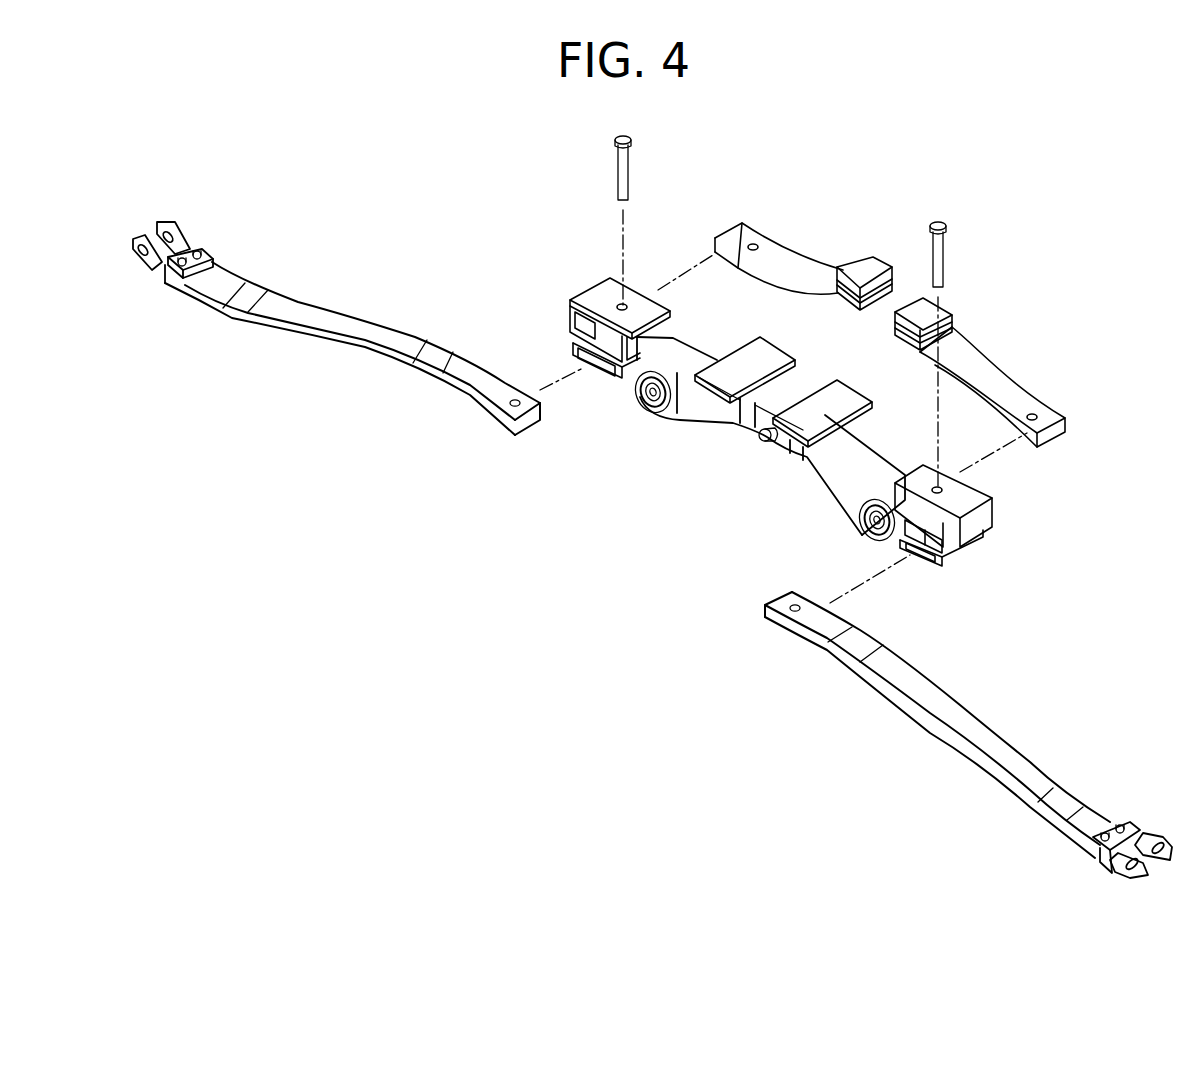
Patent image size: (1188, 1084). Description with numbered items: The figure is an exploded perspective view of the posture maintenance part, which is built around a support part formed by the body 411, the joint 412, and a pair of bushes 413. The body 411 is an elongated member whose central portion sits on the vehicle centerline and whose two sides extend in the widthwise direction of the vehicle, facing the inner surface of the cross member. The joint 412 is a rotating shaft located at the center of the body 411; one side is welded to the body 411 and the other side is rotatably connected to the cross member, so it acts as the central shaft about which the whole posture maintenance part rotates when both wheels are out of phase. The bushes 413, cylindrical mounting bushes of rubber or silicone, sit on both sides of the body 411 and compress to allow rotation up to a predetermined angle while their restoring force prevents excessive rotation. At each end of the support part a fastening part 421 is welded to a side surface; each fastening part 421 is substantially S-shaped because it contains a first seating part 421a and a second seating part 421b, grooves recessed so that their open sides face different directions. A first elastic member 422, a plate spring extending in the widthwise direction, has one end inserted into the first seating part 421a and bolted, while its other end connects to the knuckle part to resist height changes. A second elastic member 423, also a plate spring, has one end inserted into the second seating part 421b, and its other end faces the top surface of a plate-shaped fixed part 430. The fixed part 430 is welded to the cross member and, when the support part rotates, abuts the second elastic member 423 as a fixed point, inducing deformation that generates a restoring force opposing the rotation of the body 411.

The body 411 is at (830, 472).
The joint 412 is at (760, 437).
The bush 413 is at (640, 397).
The fastening part 421 is at (781, 351).
The first seating part 421a is at (580, 340).
The second seating part 421b is at (608, 333).
The first elastic member 422 is at (343, 333).
The second elastic member 423 is at (960, 363).
The fixed part 430 is at (827, 397).